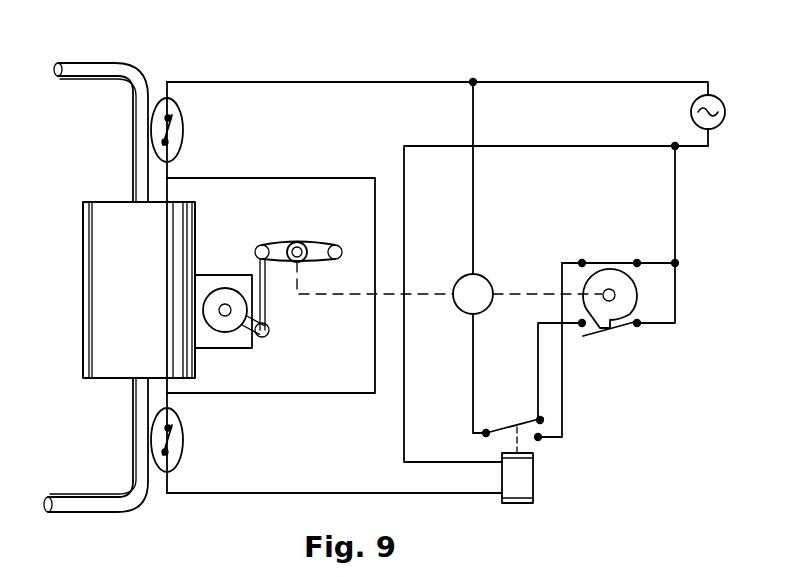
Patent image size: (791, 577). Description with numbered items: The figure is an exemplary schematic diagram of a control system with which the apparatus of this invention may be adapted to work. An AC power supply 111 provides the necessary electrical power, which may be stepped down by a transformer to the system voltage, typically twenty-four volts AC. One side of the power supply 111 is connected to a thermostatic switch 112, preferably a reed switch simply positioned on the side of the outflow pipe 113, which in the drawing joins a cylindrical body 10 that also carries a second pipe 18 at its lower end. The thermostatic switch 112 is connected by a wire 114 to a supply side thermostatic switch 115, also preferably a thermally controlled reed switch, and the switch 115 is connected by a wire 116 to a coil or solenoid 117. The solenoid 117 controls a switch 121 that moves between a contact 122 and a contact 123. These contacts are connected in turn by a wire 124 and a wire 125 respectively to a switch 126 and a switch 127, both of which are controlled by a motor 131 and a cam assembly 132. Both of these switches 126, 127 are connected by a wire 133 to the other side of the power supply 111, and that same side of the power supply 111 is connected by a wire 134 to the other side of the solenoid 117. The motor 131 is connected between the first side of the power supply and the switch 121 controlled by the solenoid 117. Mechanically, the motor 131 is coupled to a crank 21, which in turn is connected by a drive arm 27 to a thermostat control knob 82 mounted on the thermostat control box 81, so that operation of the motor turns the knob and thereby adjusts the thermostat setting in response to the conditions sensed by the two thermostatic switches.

The cylinder 10 is at (118, 360).
The outlet pipe 18 is at (83, 497).
The outflow pipe 113 is at (100, 63).
The crank 21 is at (312, 242).
The drive arm 27 is at (267, 300).
The thermostat control box 81 is at (205, 275).
The control knob 82 is at (226, 320).
The AC power supply 111 is at (692, 110).
The thermostatic switch 112 is at (185, 127).
The wire 114 is at (270, 178).
The supply side thermostatic switch 115 is at (185, 439).
The wire 116 is at (318, 493).
The solenoid 117 is at (530, 482).
The switch 121 is at (496, 431).
The contact 122 is at (538, 418).
The contact 123 is at (542, 441).
The wire 124 is at (538, 342).
The wire 125 is at (565, 381).
The switch 126 is at (598, 332).
The switch 127 is at (598, 263).
The motor 131 is at (463, 277).
The cam assembly 132 is at (630, 298).
The wire 133 is at (672, 172).
The wire 134 is at (525, 146).